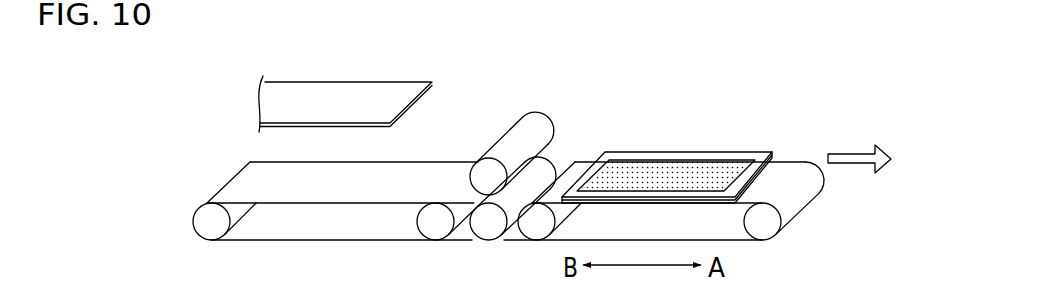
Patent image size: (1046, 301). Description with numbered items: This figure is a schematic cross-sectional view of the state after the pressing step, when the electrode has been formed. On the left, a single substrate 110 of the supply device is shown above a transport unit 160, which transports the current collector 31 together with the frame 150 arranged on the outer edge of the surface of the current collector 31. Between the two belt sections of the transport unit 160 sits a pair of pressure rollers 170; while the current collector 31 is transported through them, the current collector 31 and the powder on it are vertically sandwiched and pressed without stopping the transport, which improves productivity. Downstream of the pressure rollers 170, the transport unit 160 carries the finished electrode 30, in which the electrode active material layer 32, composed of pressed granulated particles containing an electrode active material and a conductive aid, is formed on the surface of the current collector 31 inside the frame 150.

The substrate 110 is at (303, 97).
The transport unit 160 is at (227, 190).
The pressure rollers 170 is at (530, 120).
The frame 150 is at (753, 157).
The electrode 30 is at (666, 134).
The current collector 31 is at (619, 195).
The electrode active material layer 32 is at (601, 126).